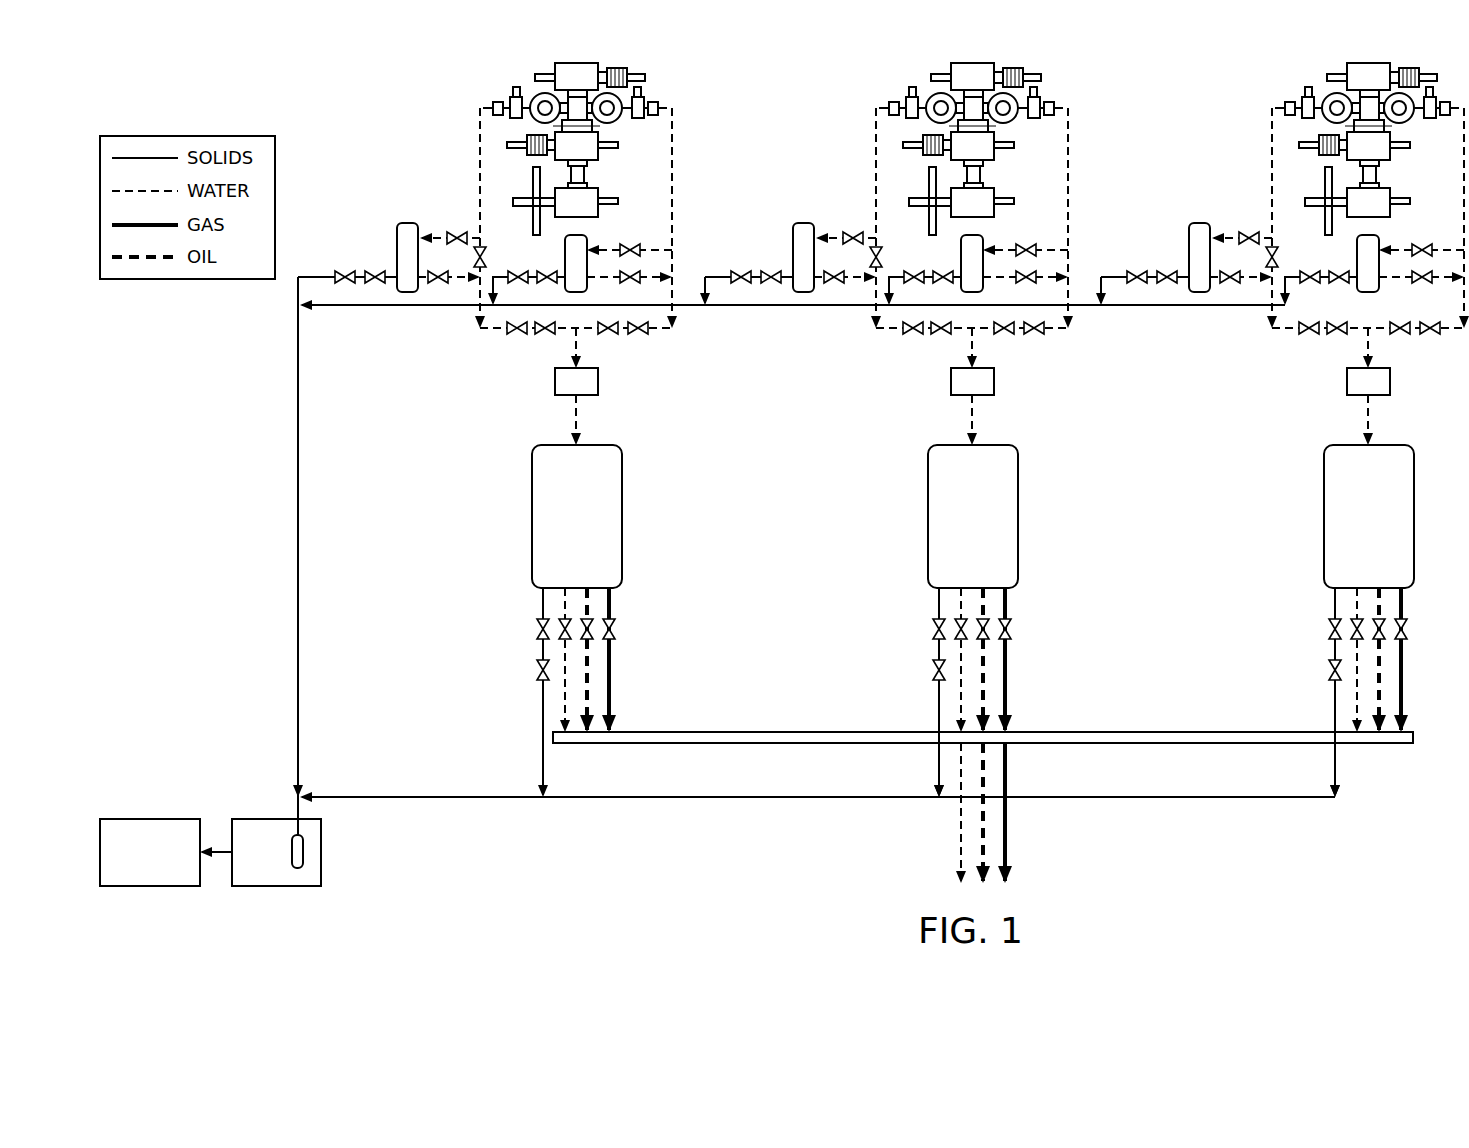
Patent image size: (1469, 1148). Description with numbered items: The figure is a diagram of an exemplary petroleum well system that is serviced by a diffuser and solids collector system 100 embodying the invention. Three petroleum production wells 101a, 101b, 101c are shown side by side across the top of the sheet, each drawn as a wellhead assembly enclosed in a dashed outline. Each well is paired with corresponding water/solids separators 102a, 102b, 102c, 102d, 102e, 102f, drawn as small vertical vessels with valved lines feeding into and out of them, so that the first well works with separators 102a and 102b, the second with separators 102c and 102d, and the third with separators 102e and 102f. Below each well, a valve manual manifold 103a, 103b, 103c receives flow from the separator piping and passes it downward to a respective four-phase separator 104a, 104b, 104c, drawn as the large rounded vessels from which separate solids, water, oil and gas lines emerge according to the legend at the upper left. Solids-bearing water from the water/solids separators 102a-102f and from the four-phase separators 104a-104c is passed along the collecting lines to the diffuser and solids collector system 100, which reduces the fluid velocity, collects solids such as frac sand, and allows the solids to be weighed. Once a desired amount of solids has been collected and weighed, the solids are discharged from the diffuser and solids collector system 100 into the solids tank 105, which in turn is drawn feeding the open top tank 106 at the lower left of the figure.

The diffuser and solids collector system 100 is at (305, 852).
The petroleum production well 101a is at (474, 102).
The petroleum production well 101b is at (870, 102).
The petroleum production well 101c is at (1266, 102).
The water/solids separator 102a is at (397, 247).
The water/solids separator 102b is at (565, 253).
The water/solids separator 102c is at (793, 247).
The water/solids separator 102d is at (961, 253).
The water/solids separator 102e is at (1189, 247).
The water/solids separator 102f is at (1357, 253).
The valve manual manifold 103a is at (555, 383).
The valve manual manifold 103b is at (951, 383).
The valve manual manifold 103c is at (1347, 383).
The four-phase separator 104a is at (532, 500).
The four-phase separator 104b is at (928, 500).
The four-phase separator 104c is at (1324, 500).
The solids tank 105 is at (275, 887).
The open top tank 106 is at (148, 887).